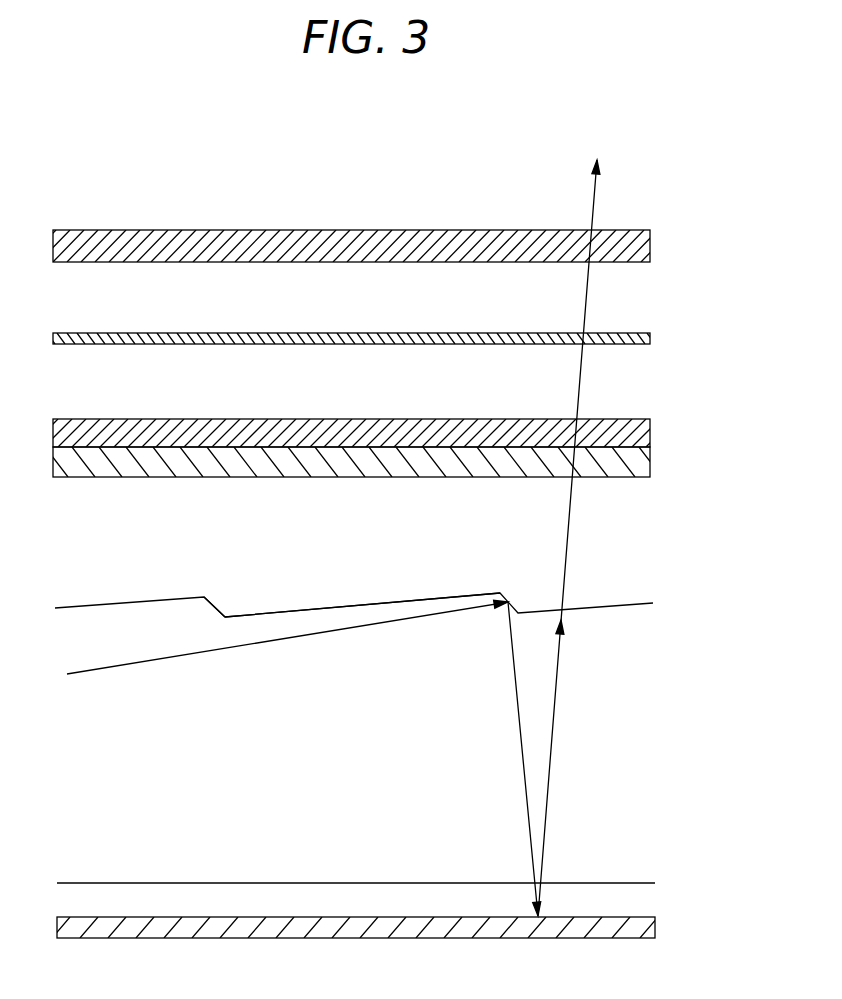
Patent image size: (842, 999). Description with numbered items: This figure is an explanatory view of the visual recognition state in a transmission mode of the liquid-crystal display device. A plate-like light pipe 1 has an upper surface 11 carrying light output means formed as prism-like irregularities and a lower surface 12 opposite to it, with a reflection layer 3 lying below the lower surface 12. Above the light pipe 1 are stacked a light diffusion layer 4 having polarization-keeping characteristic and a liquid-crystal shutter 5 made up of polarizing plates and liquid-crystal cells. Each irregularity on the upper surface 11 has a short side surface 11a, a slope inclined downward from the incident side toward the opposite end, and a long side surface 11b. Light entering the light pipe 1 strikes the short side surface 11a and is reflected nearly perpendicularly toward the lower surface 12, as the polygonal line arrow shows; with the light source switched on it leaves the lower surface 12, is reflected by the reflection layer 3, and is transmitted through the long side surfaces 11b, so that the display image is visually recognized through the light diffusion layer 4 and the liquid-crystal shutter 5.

The light pipe 1 is at (605, 757).
The reflection layer 3 is at (657, 927).
The light diffusion layer 4 is at (642, 458).
The liquid-crystal shutter 5 is at (665, 223).
The upper surface 11 is at (164, 593).
The short side surface 11a is at (218, 602).
The long side surface 11b is at (307, 607).
The lower surface 12 is at (403, 882).